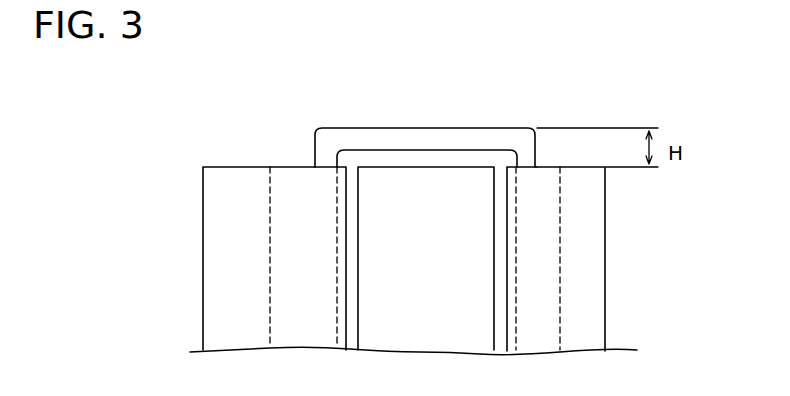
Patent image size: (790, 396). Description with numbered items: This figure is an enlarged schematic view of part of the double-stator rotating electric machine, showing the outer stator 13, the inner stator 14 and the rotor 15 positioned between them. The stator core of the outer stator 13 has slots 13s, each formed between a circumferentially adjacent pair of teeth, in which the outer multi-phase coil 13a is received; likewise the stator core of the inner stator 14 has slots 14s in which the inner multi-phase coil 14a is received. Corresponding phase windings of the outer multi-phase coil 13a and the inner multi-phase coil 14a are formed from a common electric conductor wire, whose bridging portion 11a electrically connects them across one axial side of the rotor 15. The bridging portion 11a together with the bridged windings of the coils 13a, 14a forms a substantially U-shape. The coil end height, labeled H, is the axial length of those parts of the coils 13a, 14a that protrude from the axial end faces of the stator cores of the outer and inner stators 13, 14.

The inner stator 14 is at (225, 227).
The inner multi-phase coil 14a is at (327, 162).
The slots of the inner stator 14s is at (270, 197).
The rotor 15 is at (423, 197).
The outer stator 13 is at (587, 308).
The outer multi-phase coil 13a is at (525, 158).
The slots of the outer stator 13s is at (562, 195).
The bridging portion 11a is at (405, 140).